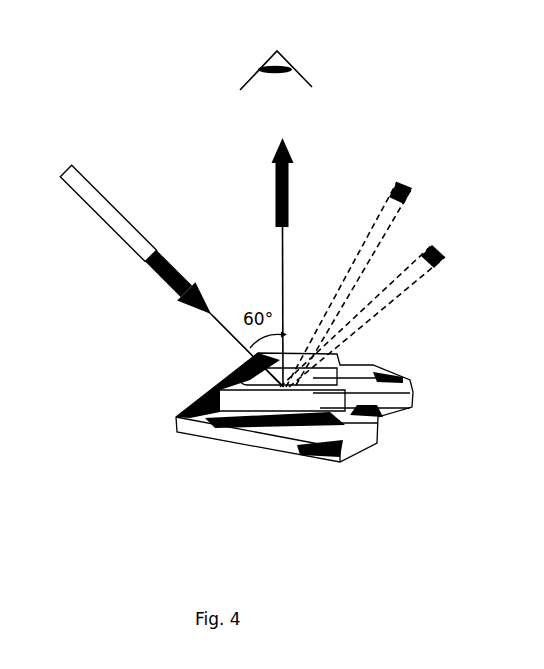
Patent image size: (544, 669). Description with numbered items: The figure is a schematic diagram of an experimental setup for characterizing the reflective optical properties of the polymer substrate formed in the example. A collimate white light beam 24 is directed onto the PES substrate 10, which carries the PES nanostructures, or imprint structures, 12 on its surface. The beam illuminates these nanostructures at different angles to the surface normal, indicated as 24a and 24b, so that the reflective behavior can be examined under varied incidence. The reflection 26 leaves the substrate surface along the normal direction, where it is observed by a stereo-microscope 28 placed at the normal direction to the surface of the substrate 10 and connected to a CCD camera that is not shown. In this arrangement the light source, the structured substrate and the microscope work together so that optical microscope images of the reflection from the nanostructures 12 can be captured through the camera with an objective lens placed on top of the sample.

The PES substrate 10 is at (214, 438).
The PES nanostructures 12 is at (372, 433).
The collimate white light beam 24 is at (152, 276).
The illumination angle 24a is at (367, 274).
The illumination angle 24b is at (382, 309).
The reflection 26 is at (296, 262).
The stereo-microscope 28 is at (288, 69).